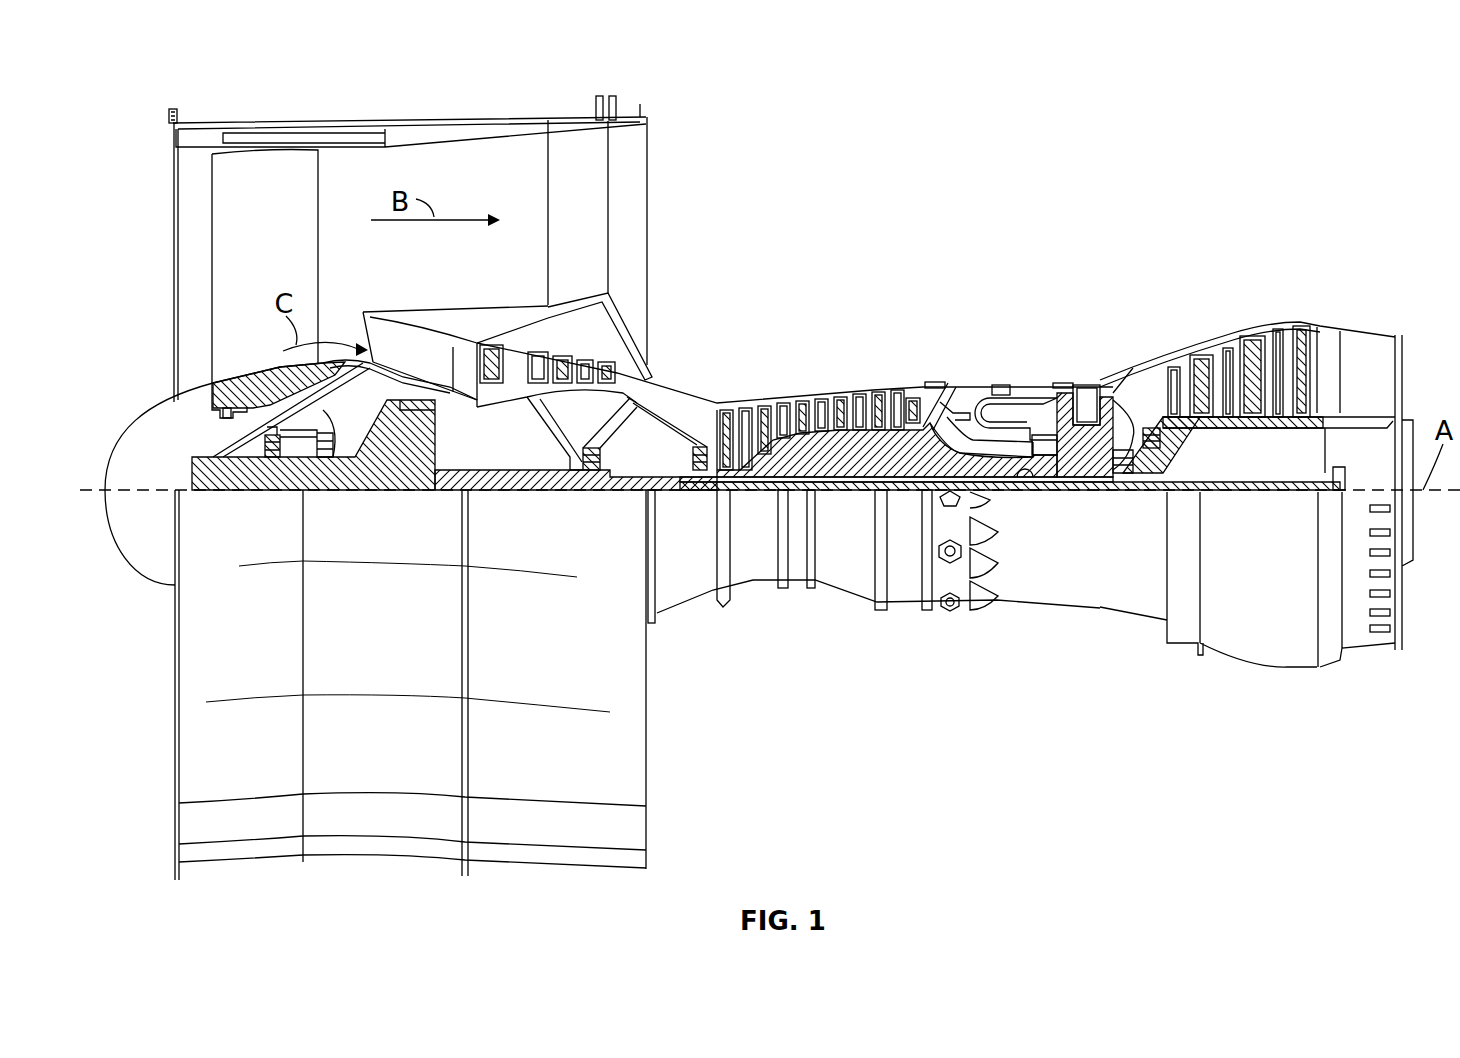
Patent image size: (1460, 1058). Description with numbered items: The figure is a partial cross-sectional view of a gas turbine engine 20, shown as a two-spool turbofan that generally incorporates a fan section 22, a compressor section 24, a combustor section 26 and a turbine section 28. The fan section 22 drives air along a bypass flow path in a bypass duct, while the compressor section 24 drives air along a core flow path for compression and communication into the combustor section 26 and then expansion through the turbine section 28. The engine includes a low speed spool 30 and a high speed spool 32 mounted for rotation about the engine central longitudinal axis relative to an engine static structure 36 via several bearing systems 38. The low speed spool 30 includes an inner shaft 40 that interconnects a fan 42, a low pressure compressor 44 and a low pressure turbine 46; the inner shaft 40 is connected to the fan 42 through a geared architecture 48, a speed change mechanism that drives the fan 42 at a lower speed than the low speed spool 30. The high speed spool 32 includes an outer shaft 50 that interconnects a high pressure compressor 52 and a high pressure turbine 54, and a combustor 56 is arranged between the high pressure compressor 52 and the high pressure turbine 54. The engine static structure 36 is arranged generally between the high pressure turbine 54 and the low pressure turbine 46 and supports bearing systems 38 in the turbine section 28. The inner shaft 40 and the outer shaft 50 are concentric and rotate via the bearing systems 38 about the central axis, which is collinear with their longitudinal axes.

The gas turbine engine 20 is at (1224, 156).
The fan section 22 is at (452, 106).
The compressor section 24 is at (755, 328).
The combustor section 26 is at (1002, 342).
The turbine section 28 is at (1154, 321).
The low speed spool 30 is at (863, 498).
The high speed spool 32 is at (917, 442).
The engine static structure 36 is at (904, 617).
The bearing systems 38 is at (273, 452).
The inner shaft 40 is at (660, 488).
The fan 42 is at (262, 252).
The low pressure compressor 44 is at (562, 368).
The low pressure turbine 46 is at (1247, 347).
The geared architecture 48 is at (412, 455).
The outer shaft 50 is at (1030, 468).
The high pressure compressor 52 is at (825, 460).
The high pressure turbine 54 is at (1085, 385).
The combustor 56 is at (1012, 410).